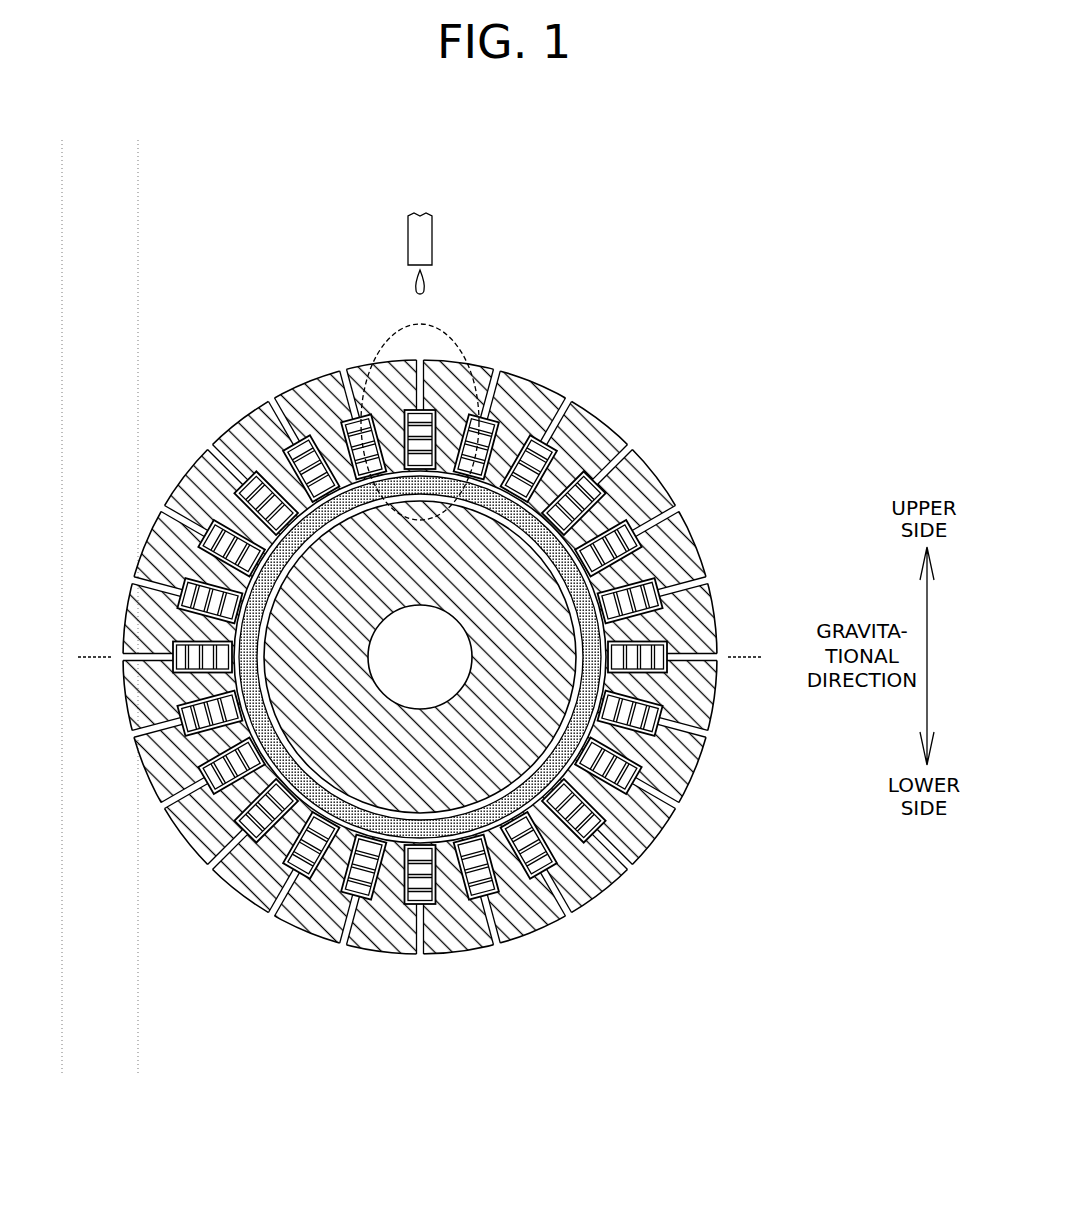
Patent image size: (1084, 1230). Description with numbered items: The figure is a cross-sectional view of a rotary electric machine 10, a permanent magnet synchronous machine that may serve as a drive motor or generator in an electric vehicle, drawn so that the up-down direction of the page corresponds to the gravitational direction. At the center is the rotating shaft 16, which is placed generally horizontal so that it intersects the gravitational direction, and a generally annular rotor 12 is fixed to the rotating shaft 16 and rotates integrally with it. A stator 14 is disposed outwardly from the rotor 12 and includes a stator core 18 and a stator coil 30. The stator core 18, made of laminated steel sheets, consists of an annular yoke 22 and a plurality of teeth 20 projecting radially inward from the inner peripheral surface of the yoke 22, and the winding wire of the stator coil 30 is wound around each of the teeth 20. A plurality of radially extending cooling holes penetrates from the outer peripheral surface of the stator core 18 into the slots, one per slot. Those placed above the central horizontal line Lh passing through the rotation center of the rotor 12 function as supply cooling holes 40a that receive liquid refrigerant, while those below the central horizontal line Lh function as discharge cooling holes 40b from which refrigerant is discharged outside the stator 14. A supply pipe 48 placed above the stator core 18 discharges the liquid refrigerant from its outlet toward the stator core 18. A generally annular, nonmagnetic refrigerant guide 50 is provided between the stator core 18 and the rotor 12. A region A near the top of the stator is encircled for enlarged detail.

The rotary electric machine 10 is at (445, 610).
The rotor 12 is at (278, 681).
The stator 14 is at (484, 701).
The rotating shaft 16 is at (378, 663).
The stator core 18 is at (485, 657).
The teeth 20 is at (633, 543).
The yoke 22 is at (650, 483).
The stator coil 30 is at (658, 650).
The supply cooling holes 40a is at (271, 400).
The discharge cooling holes 40b is at (338, 947).
The supply pipe 48 is at (434, 238).
The refrigerant guide 50 is at (262, 878).
The region A is at (381, 348).
The central horizontal line Lh is at (420, 657).